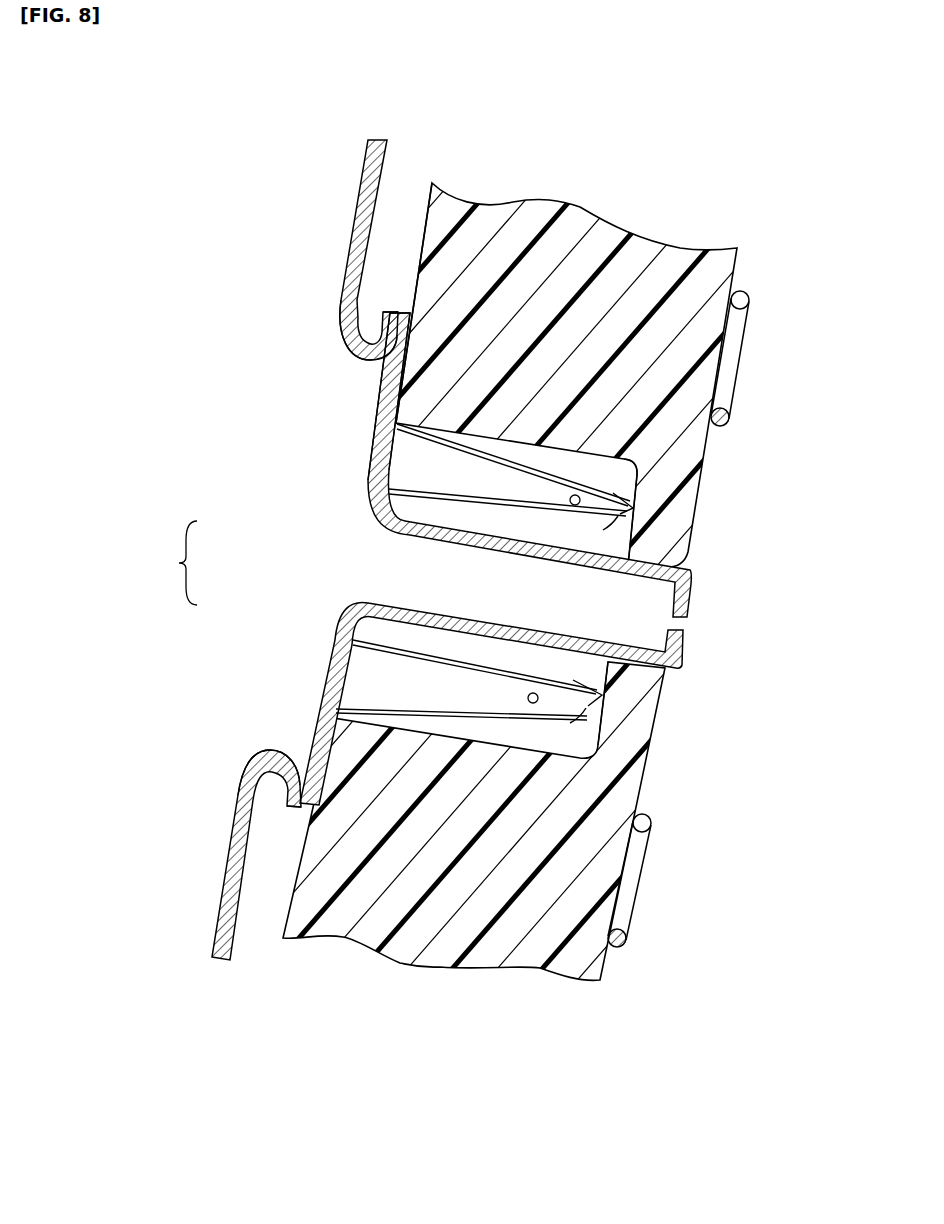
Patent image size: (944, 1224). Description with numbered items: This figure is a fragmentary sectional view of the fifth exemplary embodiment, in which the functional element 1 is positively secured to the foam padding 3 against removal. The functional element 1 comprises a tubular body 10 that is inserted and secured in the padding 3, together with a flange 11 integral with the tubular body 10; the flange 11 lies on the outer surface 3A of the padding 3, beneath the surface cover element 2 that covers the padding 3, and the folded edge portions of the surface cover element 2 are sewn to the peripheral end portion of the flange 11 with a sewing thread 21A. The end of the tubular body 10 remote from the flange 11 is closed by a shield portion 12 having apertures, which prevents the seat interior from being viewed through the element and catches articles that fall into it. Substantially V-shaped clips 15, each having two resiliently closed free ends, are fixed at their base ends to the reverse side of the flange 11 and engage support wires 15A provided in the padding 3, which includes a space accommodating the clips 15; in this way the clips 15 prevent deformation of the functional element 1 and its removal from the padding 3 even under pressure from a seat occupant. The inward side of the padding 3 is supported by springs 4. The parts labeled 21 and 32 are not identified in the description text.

The functional element 1 is at (174, 563).
The surface cover element 2 is at (252, 593).
The foam padding 3 is at (574, 220).
The outer surface of the padding 3A is at (424, 224).
The springs 4 is at (735, 335).
The tubular body 10 is at (526, 559).
The flange 11 is at (380, 398).
The shield portion 12 is at (687, 653).
The V-shaped clips 15 is at (491, 605).
The support wires 15A is at (573, 506).
The hook portion of sheet 21 is at (372, 328).
The sewing thread 21A is at (413, 331).
The panel recess 32 is at (600, 477).